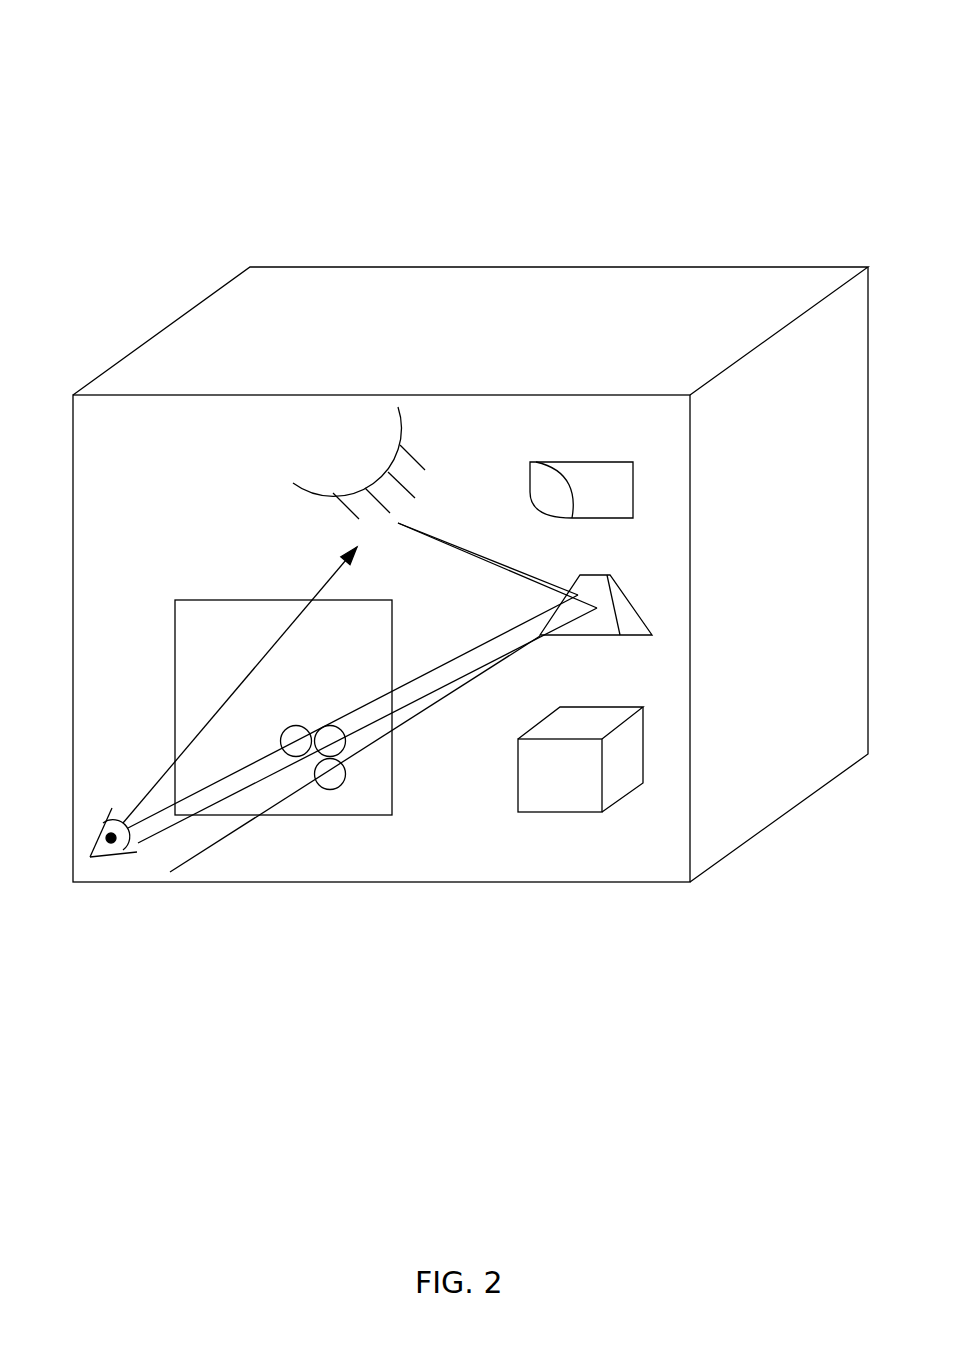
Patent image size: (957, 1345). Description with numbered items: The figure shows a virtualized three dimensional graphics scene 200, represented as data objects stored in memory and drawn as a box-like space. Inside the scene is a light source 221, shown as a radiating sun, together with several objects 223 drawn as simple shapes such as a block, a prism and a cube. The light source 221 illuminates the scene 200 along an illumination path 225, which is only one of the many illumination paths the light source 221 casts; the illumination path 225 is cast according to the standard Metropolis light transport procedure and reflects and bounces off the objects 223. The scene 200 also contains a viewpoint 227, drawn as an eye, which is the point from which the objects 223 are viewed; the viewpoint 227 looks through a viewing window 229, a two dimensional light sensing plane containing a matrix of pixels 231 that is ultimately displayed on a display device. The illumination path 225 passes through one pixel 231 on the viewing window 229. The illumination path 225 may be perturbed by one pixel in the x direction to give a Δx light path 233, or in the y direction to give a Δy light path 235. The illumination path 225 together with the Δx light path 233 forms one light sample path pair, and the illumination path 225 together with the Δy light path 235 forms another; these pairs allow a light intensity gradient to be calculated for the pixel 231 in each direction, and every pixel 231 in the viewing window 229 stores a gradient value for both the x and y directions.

The virtualized three dimensional graphics scene 200 is at (110, 110).
The light source 221 is at (320, 490).
The objects 223 is at (617, 504).
The illumination path 225 is at (428, 536).
The viewpoint 227 is at (100, 832).
The viewing window 229 is at (302, 720).
The pixel 231 is at (301, 757).
The Δx light path 233 is at (410, 683).
The Δy light path 235 is at (407, 724).